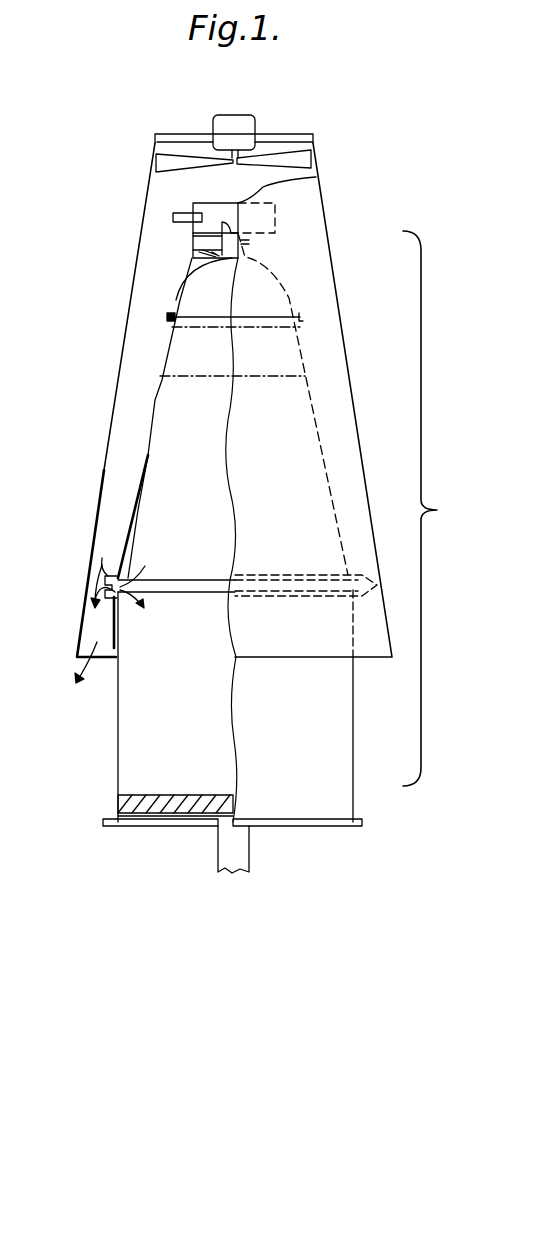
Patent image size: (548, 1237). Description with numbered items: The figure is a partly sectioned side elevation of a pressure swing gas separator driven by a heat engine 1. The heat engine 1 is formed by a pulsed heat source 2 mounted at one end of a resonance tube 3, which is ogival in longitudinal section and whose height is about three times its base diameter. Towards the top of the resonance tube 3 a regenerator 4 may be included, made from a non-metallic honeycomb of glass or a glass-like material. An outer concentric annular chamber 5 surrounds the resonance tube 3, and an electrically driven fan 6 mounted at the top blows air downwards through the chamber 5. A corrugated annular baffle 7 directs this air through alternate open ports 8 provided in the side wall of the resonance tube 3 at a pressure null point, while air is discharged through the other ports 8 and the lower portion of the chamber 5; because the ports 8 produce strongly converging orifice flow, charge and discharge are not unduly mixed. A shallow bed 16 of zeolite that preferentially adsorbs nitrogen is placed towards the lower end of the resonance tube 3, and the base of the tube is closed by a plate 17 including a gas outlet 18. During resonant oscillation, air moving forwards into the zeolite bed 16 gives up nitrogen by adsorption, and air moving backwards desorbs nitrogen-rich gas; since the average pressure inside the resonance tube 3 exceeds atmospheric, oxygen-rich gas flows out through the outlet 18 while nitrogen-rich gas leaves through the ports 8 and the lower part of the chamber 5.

The heat engine 1 is at (429, 508).
The pulsed heat source 2 is at (204, 243).
The resonance tube 3 is at (137, 495).
The regenerator 4 is at (285, 360).
The outer concentric annular chamber 5 is at (140, 338).
The electrically driven fan 6 is at (292, 158).
The corrugated annular baffle 7 is at (102, 578).
The open ports 8 is at (110, 577).
The shallow bed of zeolite 16 is at (198, 814).
The plate 17 is at (152, 826).
The gas outlet 18 is at (237, 857).